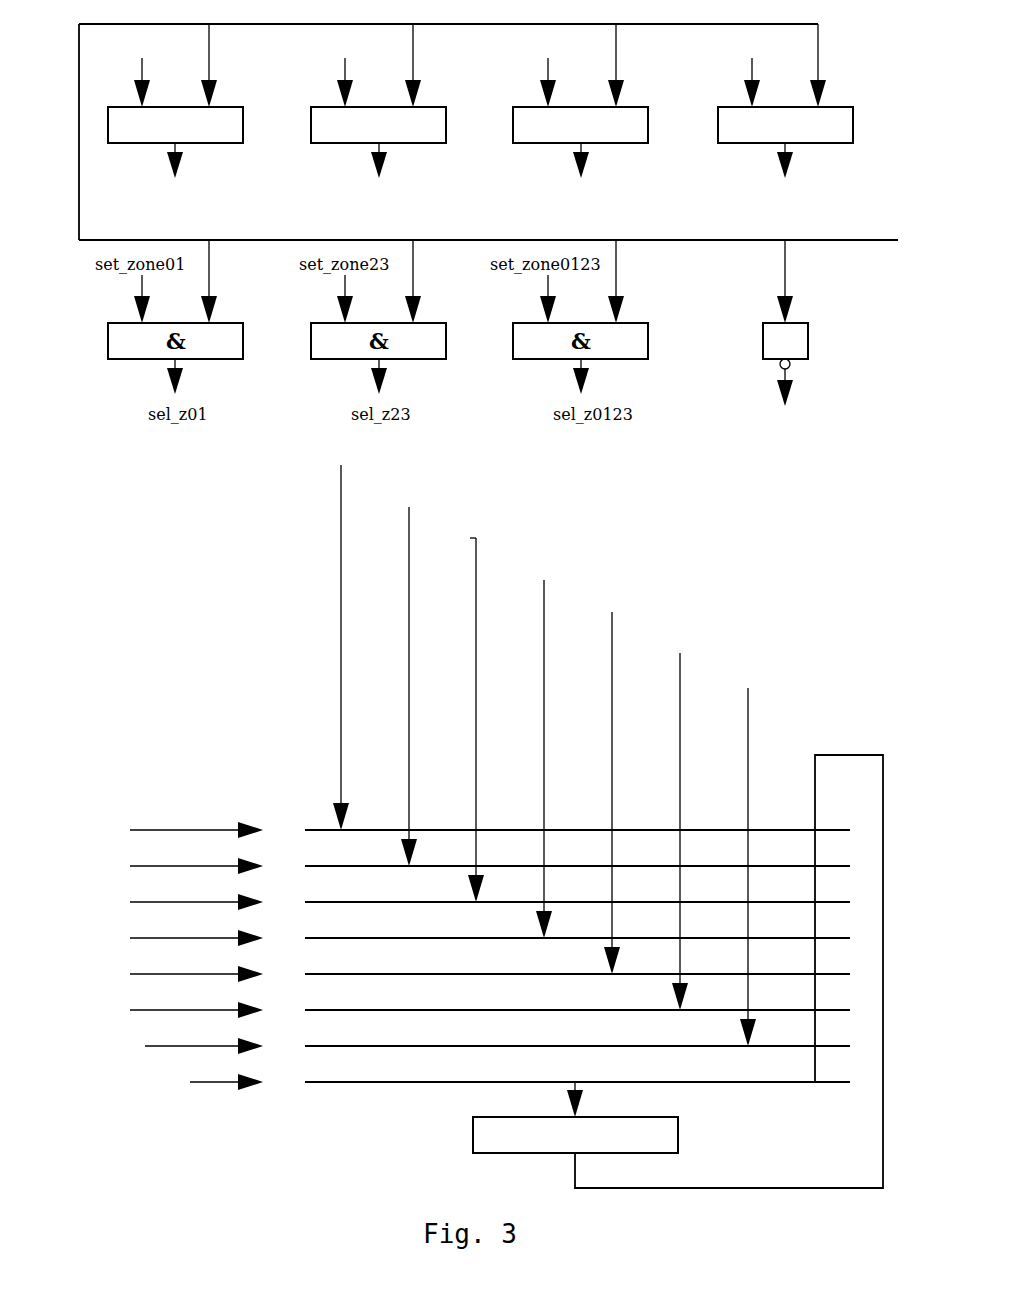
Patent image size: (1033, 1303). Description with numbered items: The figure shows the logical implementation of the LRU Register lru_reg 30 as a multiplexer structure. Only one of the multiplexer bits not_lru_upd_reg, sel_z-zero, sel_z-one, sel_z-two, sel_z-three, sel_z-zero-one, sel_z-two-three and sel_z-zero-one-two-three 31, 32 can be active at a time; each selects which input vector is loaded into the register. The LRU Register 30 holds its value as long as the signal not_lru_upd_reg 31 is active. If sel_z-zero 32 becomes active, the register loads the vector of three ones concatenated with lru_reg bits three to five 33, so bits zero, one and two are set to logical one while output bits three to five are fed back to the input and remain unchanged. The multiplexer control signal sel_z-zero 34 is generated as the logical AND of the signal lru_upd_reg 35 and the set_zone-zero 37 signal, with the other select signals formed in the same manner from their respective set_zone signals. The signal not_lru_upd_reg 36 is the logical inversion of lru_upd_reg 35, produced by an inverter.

The LRU Register lru_reg(0:5) 30 is at (456, 1129).
The not_lru_upd_reg multiplexer bit 31 is at (34, 1080).
The sel_z0 multiplexer bit 32 is at (76, 806).
The vector "111" & lru_reg(3:5) 33 is at (300, 462).
The multiplexer control signal sel_z0 34 is at (210, 195).
The lru_upd_reg signal 35 is at (840, 298).
The not_lru_upd_reg signal 36 is at (785, 438).
The set_zone0 signal 37 is at (182, 47).